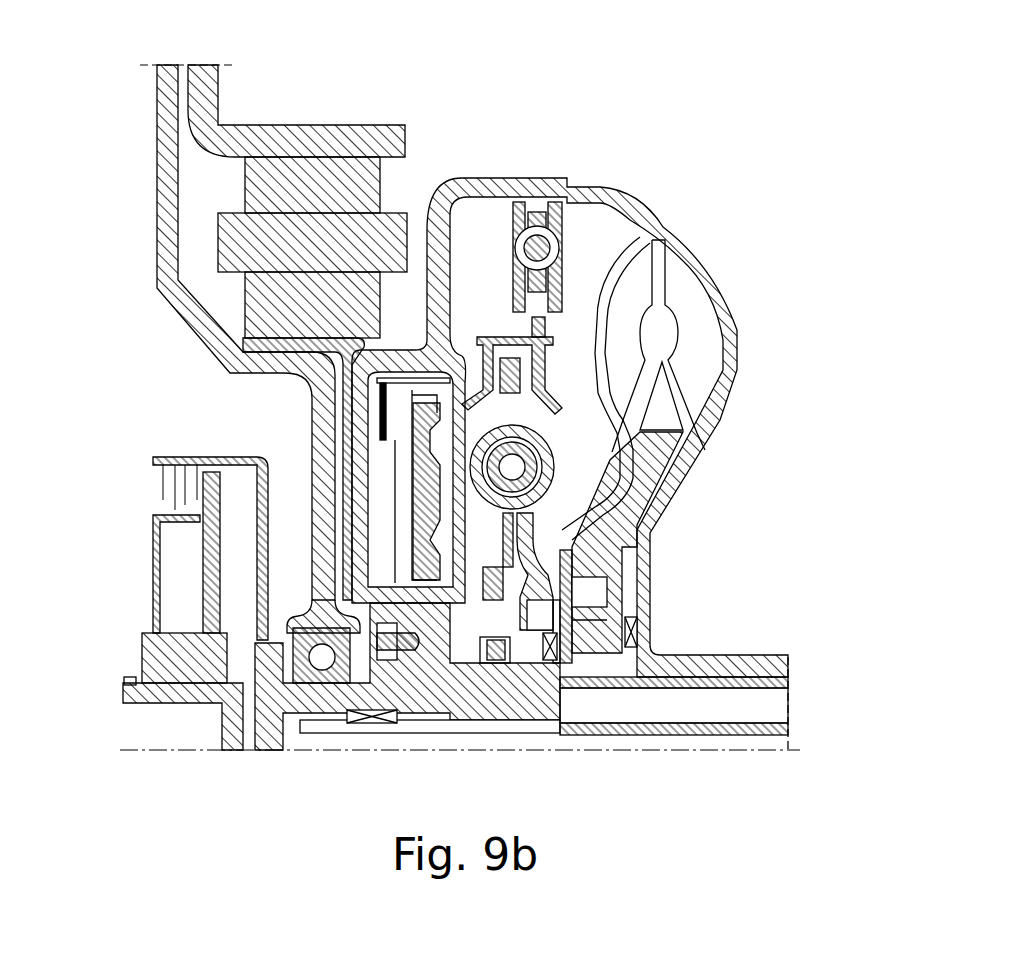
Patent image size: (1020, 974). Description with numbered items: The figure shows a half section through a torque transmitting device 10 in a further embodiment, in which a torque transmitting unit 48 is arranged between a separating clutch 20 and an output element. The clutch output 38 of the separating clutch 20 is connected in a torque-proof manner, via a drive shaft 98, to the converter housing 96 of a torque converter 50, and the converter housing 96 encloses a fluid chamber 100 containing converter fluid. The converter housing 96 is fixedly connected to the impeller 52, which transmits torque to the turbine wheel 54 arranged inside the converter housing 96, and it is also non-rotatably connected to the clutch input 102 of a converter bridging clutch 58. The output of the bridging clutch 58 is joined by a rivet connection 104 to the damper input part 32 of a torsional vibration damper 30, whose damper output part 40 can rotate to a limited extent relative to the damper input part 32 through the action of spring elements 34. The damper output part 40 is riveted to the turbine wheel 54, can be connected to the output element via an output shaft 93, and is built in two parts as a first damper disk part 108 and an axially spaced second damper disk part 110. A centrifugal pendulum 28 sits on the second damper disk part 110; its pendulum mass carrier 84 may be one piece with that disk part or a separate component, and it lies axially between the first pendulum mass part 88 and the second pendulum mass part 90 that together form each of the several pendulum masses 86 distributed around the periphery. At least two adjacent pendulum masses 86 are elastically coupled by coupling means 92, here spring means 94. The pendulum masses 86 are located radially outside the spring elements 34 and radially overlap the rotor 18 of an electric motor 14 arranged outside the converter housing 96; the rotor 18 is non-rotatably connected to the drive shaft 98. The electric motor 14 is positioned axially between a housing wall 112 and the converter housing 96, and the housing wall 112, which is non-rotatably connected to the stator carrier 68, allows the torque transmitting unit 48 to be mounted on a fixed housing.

The torque transmitting device 10 is at (650, 192).
The electric motor 14 is at (212, 190).
The rotor 18 is at (252, 302).
The separating clutch 20 is at (148, 493).
The centrifugal pendulum 28 is at (503, 235).
The torsional vibration damper 30 is at (563, 457).
The damper input part 32 is at (565, 575).
The spring elements 34 is at (533, 520).
The clutch output 38 is at (205, 505).
The damper output part 40 is at (640, 353).
The torque transmitting unit 48 is at (597, 167).
The torque converter 50 is at (503, 170).
The impeller 52 is at (560, 357).
The turbine wheel 54 is at (672, 372).
The converter bridging clutch 58 is at (375, 413).
The stator carrier 68 is at (205, 82).
The pendulum mass carrier 84 is at (552, 208).
The pendulum masses 86 is at (650, 225).
The first pendulum mass part 88 is at (520, 262).
The second pendulum mass part 90 is at (668, 240).
The coupling means 92 is at (572, 255).
The output shaft 93 is at (738, 733).
The spring means 94 is at (534, 205).
The converter housing 96 is at (322, 393).
The drive shaft 98 is at (330, 703).
The fluid chamber 100 is at (458, 185).
The clutch input 102 is at (385, 512).
The rivet connection 104 is at (637, 633).
The first damper disk part 108 is at (598, 300).
The second damper disk part 110 is at (640, 482).
The housing wall 112 is at (300, 365).